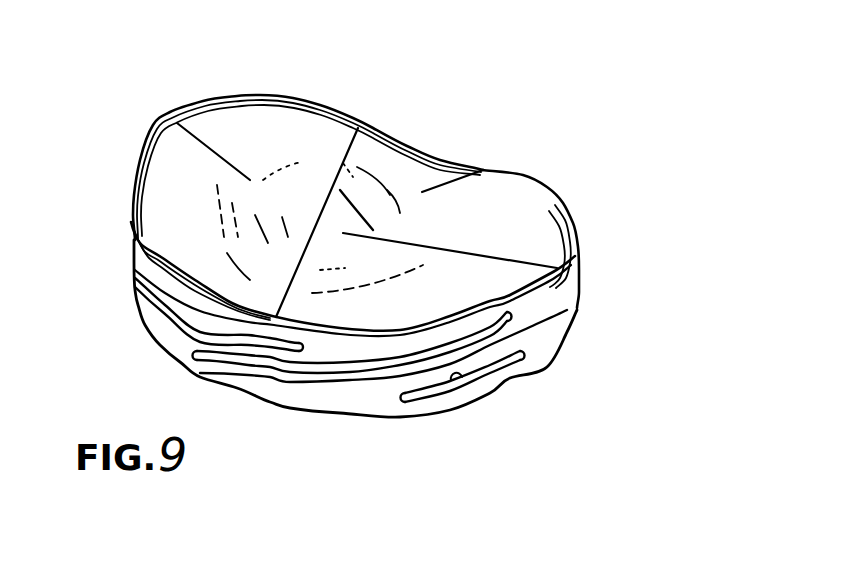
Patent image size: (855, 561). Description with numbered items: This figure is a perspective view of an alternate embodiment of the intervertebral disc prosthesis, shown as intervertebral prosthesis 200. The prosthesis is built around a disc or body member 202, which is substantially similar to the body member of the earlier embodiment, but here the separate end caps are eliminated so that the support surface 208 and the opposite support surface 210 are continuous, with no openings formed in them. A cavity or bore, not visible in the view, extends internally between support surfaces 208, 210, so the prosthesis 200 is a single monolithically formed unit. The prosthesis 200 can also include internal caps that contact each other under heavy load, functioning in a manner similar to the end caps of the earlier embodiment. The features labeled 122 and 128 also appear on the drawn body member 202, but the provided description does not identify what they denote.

The intervertebral prosthesis 200 is at (522, 113).
The body member 202 is at (550, 242).
The support surface 208 is at (518, 178).
The support surface 210 is at (357, 418).
The slots 122 is at (574, 305).
The protrusion 128 is at (459, 381).